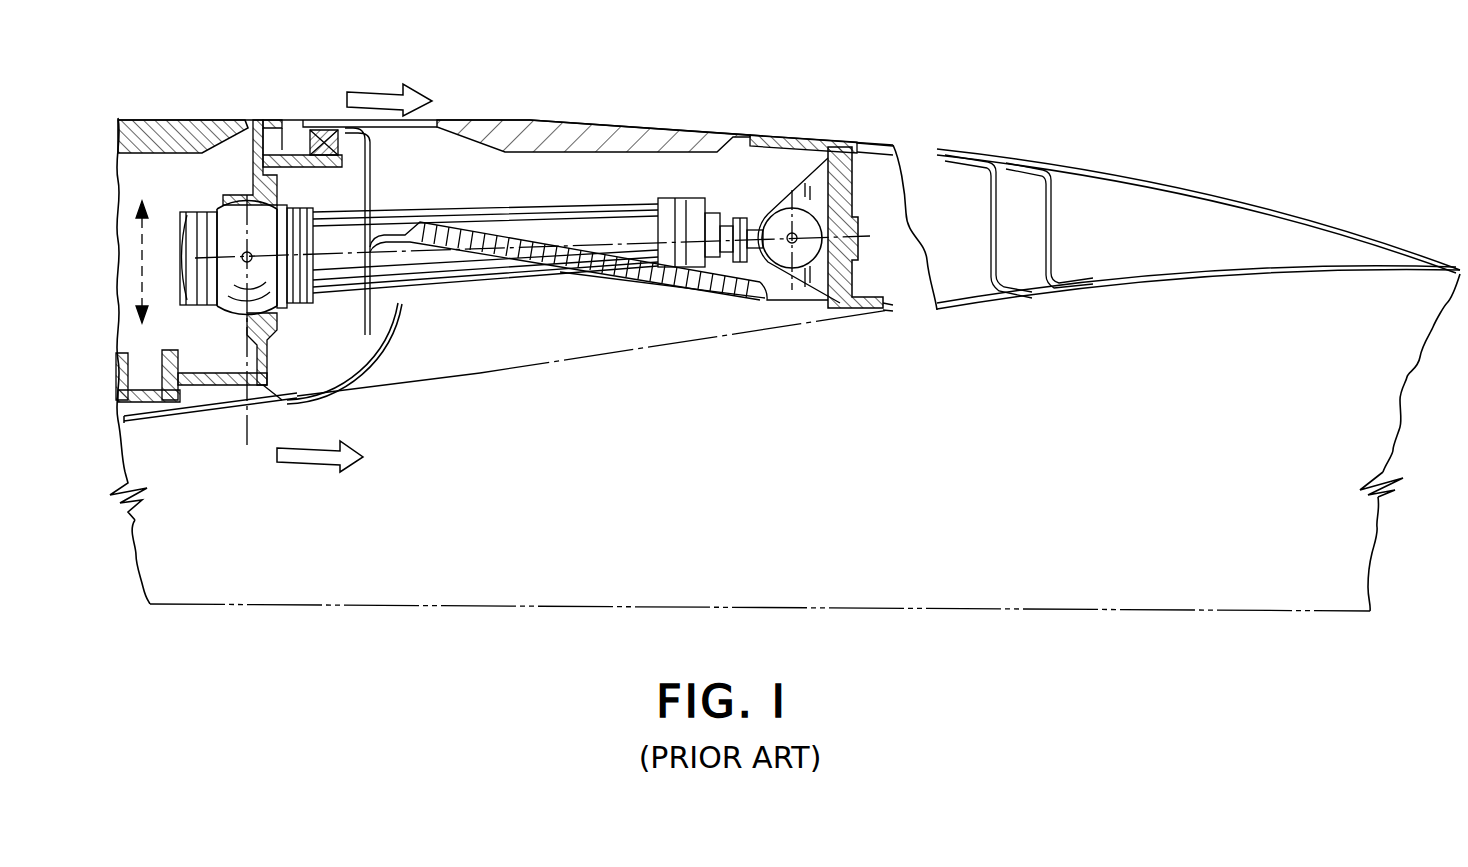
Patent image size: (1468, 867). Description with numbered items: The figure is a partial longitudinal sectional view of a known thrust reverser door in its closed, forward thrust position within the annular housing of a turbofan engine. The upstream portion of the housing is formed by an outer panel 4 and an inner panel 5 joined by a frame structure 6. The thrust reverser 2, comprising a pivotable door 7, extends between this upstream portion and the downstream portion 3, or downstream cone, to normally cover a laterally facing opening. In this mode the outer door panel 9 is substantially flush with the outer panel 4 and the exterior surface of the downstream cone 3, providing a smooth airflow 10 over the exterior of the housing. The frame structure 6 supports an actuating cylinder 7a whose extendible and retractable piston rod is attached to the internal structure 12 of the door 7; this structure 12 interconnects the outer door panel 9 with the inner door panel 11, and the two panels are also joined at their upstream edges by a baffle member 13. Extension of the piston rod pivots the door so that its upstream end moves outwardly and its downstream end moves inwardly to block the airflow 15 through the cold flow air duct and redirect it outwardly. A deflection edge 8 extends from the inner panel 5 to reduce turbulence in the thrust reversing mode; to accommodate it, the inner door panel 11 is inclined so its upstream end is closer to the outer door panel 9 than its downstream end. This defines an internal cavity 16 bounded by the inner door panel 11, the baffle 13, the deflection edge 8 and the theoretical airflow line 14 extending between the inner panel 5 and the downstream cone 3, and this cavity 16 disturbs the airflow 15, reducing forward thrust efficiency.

The thrust reverser 2 is at (800, 127).
The downstream portion 3 is at (1172, 263).
The outer panel 4 is at (184, 128).
The inner panel 5 is at (150, 423).
The frame structure 6 is at (257, 357).
The pivotable door 7 is at (625, 165).
The actuating cylinder 7a is at (501, 215).
The deflection edge 8 is at (358, 350).
The outer door panel 9 is at (718, 137).
The airflow 10 is at (347, 93).
The inner door panel 11 is at (620, 283).
The internal structure 12 is at (828, 292).
The baffle member 13 is at (364, 320).
The theoretical airflow line 14 is at (677, 345).
The airflow 15 is at (300, 463).
The internal cavity 16 is at (497, 335).